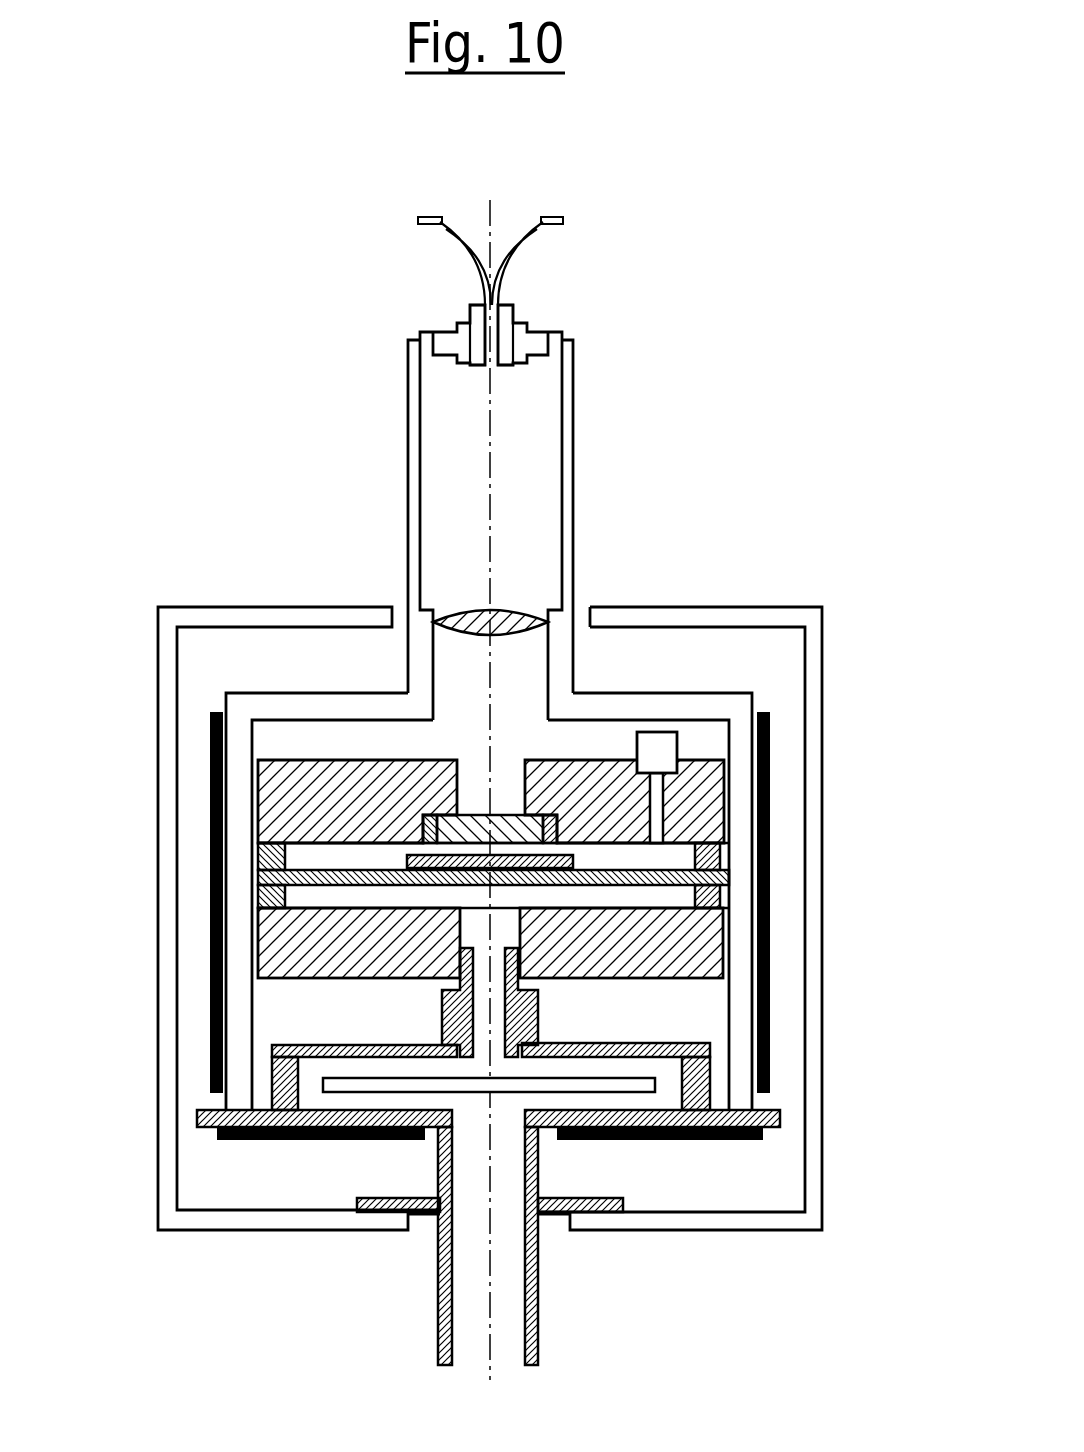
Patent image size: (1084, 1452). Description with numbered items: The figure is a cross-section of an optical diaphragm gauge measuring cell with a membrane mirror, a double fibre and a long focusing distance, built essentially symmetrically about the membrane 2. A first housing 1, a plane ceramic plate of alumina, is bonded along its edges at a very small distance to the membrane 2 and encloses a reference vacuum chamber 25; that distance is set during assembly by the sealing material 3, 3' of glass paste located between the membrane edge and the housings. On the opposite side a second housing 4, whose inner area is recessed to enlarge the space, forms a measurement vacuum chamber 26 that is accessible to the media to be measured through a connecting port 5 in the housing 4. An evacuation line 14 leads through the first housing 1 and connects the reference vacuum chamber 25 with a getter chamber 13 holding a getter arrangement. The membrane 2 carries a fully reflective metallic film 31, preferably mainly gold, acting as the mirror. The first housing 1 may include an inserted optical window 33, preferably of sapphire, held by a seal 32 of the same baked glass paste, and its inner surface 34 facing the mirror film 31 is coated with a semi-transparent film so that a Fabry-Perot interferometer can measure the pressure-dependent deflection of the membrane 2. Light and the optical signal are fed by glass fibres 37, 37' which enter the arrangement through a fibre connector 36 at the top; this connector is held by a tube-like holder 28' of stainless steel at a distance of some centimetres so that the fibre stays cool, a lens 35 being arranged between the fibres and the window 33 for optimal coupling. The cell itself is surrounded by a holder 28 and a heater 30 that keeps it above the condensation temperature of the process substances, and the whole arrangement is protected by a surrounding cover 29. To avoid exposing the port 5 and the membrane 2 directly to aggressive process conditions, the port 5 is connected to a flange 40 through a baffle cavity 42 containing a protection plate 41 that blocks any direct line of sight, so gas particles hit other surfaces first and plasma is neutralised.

The first housing 1 is at (702, 777).
The membrane 2 is at (673, 876).
The seal 3 is at (806, 841).
The seal 3' is at (811, 907).
The second housing 4 is at (680, 952).
The connecting port 5 is at (523, 1018).
The getter chamber 13 is at (658, 748).
The evacuation line 14 is at (658, 805).
The reference vacuum chamber 25 is at (308, 855).
The measurement vacuum chamber 26 is at (308, 892).
The holder 28 is at (415, 901).
The holder 28' is at (544, 512).
The cover 29 is at (813, 638).
The heater 30 is at (767, 1143).
The film 31 is at (427, 863).
The seal 32 is at (463, 830).
The optical window 33 is at (430, 825).
The inner surface 34 is at (507, 833).
The lens 35 is at (500, 625).
The optical fiber connector 36 is at (507, 317).
The glass fibre 37 is at (403, 230).
The glass fibre 37' is at (586, 230).
The flange 40 is at (530, 1235).
The protection plate 41 is at (380, 1083).
The baffle cavity 42 is at (429, 1103).